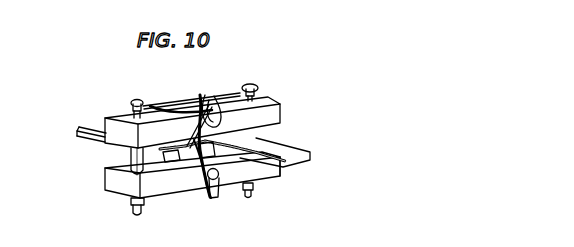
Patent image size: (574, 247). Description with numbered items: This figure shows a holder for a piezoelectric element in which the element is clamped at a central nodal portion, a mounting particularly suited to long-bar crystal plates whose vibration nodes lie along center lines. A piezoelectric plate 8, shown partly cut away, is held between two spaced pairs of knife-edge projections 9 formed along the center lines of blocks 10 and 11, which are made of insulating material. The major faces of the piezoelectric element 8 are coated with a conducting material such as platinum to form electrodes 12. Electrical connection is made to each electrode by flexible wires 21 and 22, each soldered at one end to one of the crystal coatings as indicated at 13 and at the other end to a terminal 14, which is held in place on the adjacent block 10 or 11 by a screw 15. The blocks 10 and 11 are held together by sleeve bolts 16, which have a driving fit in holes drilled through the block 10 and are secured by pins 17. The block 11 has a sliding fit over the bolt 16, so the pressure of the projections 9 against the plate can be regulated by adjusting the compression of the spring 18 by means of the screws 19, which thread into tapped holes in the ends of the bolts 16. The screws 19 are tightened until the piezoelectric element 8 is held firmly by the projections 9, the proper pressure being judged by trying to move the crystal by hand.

The piezoelectric plate 8 is at (292, 151).
The knife-edge projections 9 is at (215, 138).
The block 10 is at (178, 188).
The block 11 is at (116, 131).
The electrodes 12 is at (300, 177).
The soldered connection 13 is at (200, 133).
The terminal 14 is at (217, 95).
The screw 15 is at (230, 93).
The sleeve bolts 16 is at (125, 115).
The pins 17 is at (157, 185).
The spring 18 is at (150, 104).
The screws 19 is at (136, 100).
The flexible wire 21 is at (195, 124).
The flexible wire 22 is at (203, 183).